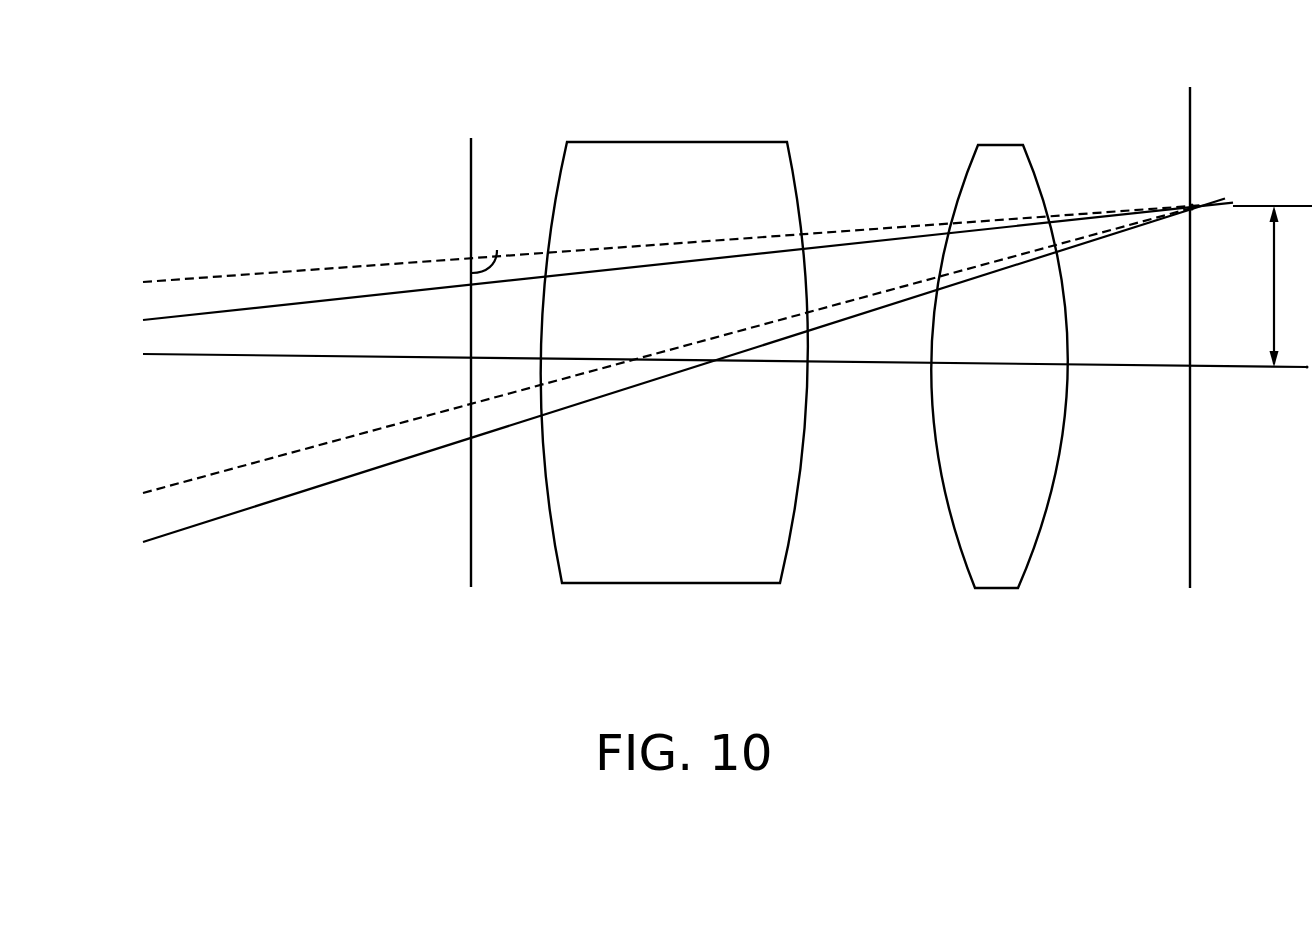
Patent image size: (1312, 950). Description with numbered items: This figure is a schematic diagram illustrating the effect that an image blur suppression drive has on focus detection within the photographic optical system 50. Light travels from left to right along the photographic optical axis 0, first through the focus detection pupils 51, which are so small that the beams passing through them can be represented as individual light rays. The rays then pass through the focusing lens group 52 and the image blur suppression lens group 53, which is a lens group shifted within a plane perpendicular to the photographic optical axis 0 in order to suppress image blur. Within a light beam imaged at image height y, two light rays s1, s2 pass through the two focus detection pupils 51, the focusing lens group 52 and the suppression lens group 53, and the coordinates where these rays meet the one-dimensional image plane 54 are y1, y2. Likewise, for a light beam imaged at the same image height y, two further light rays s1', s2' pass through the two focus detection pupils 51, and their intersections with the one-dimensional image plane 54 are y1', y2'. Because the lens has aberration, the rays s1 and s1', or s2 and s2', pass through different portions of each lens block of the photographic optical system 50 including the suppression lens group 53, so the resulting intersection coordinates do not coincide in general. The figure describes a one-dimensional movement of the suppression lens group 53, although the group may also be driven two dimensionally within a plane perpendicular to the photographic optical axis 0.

The photographic optical system 50 is at (840, 716).
The focus detection pupil 51 is at (470, 420).
The focusing lens group 52 is at (660, 142).
The image blur suppression lens group 53 is at (958, 547).
The one-dimensional image plane 54 is at (1183, 577).
The light ray s1 is at (688, 272).
The light ray s1' is at (671, 238).
The light ray s2 is at (684, 377).
The light ray s2' is at (671, 349).
The image height y is at (1272, 286).
The intersection coordinate y1 is at (1221, 230).
The intersection coordinate y2 is at (1212, 259).
The intersection coordinate y1' is at (1240, 163).
The intersection coordinate y2' is at (1240, 181).
The photographic optical axis 0 is at (1307, 367).